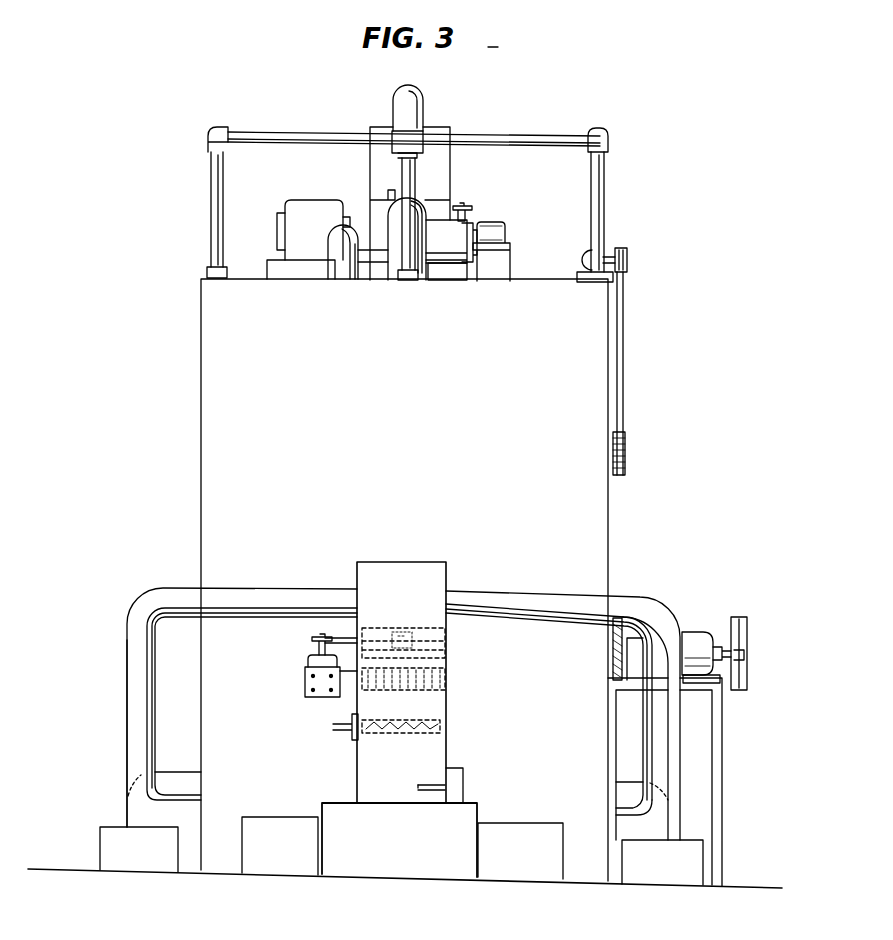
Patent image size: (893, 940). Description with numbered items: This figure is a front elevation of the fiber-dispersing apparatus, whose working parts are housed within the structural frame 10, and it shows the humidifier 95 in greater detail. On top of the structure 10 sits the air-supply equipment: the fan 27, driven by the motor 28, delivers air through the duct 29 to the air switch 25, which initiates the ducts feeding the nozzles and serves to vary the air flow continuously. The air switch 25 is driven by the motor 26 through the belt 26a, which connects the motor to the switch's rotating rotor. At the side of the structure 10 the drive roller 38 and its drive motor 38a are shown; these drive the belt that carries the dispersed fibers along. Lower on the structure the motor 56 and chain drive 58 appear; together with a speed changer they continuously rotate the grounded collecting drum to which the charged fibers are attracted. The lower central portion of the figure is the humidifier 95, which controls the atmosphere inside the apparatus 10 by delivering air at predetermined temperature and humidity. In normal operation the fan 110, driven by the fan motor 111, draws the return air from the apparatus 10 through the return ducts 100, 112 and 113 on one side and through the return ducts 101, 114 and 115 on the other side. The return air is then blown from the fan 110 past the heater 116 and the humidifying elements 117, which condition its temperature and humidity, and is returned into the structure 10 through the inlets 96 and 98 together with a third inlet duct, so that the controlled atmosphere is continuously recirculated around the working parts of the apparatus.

The structural frame 10 is at (198, 327).
The air switch 25 is at (374, 157).
The motor 26 is at (489, 222).
The belt 26a is at (452, 204).
The fan 27 is at (396, 255).
The motor 28 is at (446, 248).
The duct 29 is at (399, 95).
The drive roller 38 is at (628, 456).
The drive motor 38a is at (584, 260).
The motor 56 is at (696, 641).
The chain drive 58 is at (612, 638).
The humidifier 95 is at (455, 628).
The duct 96 is at (525, 823).
The duct 98 is at (269, 822).
The return duct 100 is at (178, 780).
The return duct 101 is at (632, 792).
The fan 110 is at (447, 676).
The fan motor 111 is at (306, 659).
The return duct 112 is at (105, 845).
The return duct 113 is at (127, 657).
The return duct 114 is at (683, 857).
The return duct 115 is at (546, 612).
The heater 116 is at (408, 720).
The humidifying elements 117 is at (456, 772).